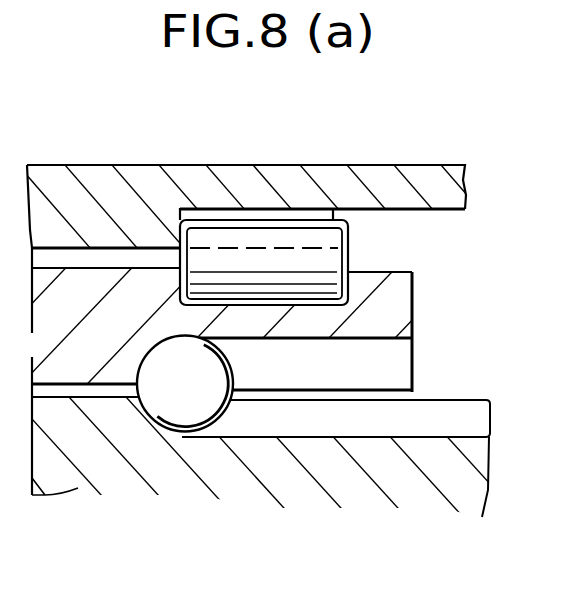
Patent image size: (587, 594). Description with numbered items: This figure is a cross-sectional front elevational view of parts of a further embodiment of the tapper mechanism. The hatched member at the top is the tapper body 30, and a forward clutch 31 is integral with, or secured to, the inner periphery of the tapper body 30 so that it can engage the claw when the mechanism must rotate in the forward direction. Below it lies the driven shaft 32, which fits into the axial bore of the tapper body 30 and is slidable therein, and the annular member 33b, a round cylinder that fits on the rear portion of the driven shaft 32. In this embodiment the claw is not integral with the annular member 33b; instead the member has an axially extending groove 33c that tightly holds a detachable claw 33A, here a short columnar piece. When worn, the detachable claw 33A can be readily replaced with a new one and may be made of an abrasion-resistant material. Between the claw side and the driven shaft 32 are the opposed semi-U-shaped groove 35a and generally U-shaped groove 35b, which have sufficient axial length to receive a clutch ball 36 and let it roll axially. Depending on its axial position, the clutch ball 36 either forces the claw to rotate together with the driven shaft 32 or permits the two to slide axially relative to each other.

The tapper body 30 is at (148, 193).
The forward clutch 31 is at (306, 221).
The detachable claw 33A is at (318, 266).
The annular member 33b is at (92, 340).
The axially extending groove 33c is at (335, 313).
The semi-U-shaped groove 35a is at (353, 367).
The U-shaped groove 35b is at (412, 415).
The clutch ball 36 is at (185, 405).
The driven shaft 32 is at (270, 453).